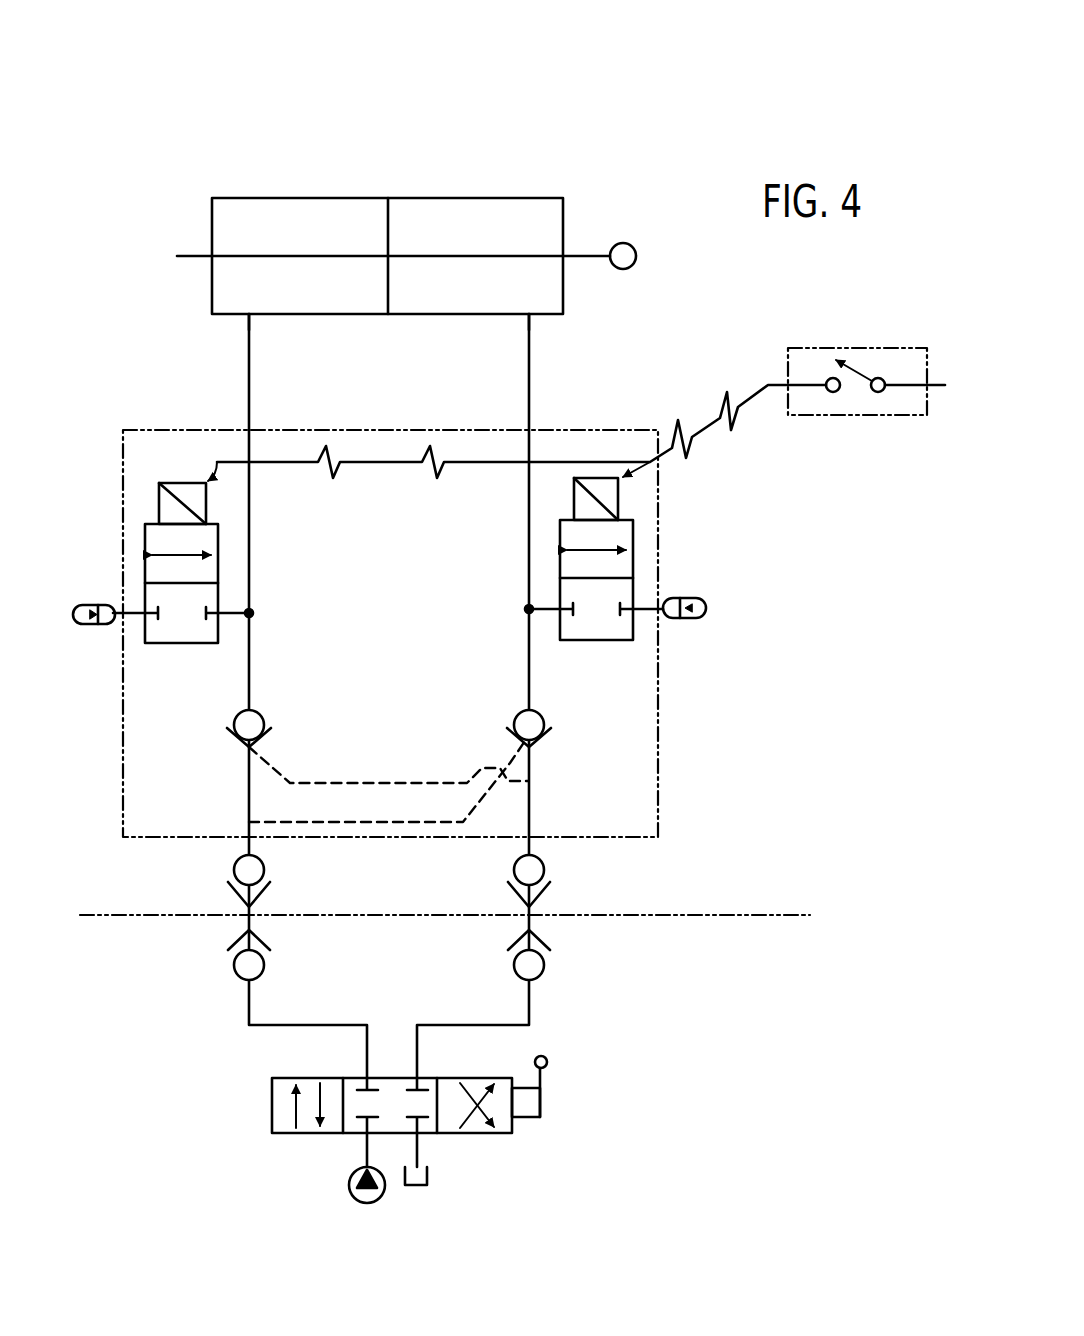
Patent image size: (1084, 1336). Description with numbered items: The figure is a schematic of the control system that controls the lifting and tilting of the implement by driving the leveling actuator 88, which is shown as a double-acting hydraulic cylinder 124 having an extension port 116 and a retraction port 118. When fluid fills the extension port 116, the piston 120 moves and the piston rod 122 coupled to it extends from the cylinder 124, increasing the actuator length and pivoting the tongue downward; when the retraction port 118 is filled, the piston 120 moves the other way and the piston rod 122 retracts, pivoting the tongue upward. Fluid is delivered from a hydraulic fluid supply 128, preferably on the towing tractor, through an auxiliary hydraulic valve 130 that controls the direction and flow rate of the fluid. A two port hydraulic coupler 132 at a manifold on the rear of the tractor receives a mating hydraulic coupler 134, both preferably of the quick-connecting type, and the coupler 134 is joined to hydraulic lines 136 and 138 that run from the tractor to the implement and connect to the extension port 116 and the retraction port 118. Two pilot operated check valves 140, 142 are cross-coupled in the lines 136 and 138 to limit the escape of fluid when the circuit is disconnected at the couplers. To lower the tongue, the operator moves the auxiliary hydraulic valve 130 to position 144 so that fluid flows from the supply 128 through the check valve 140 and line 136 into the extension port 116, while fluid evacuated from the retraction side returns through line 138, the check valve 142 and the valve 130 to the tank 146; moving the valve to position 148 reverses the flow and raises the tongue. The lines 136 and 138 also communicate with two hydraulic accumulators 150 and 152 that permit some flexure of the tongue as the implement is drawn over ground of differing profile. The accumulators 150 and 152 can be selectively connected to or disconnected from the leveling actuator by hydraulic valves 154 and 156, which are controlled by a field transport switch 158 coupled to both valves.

The leveling actuator 88 is at (437, 100).
The extension port 116 is at (246, 316).
The retraction port 118 is at (532, 317).
The piston 120 is at (391, 228).
The piston rod 122 is at (465, 253).
The hydraulic cylinder 124 is at (472, 197).
The hydraulic fluid supply 128 is at (349, 1188).
The auxiliary hydraulic valve 130 is at (367, 1091).
The two port hydraulic coupler 132 is at (249, 921).
The mating hydraulic coupler 134 is at (248, 913).
The hydraulic line 136 is at (247, 407).
The hydraulic line 138 is at (528, 400).
The pilot operated check valve 140 is at (355, 822).
The pilot operated check valve 142 is at (385, 782).
The valve position 144 is at (307, 1078).
The tank 146 is at (428, 1175).
The valve position 148 is at (477, 1078).
The hydraulic accumulator 150 is at (104, 626).
The hydraulic accumulator 152 is at (683, 620).
The hydraulic valve 154 is at (218, 570).
The hydraulic valve 156 is at (560, 570).
The field transport switch 158 is at (857, 348).